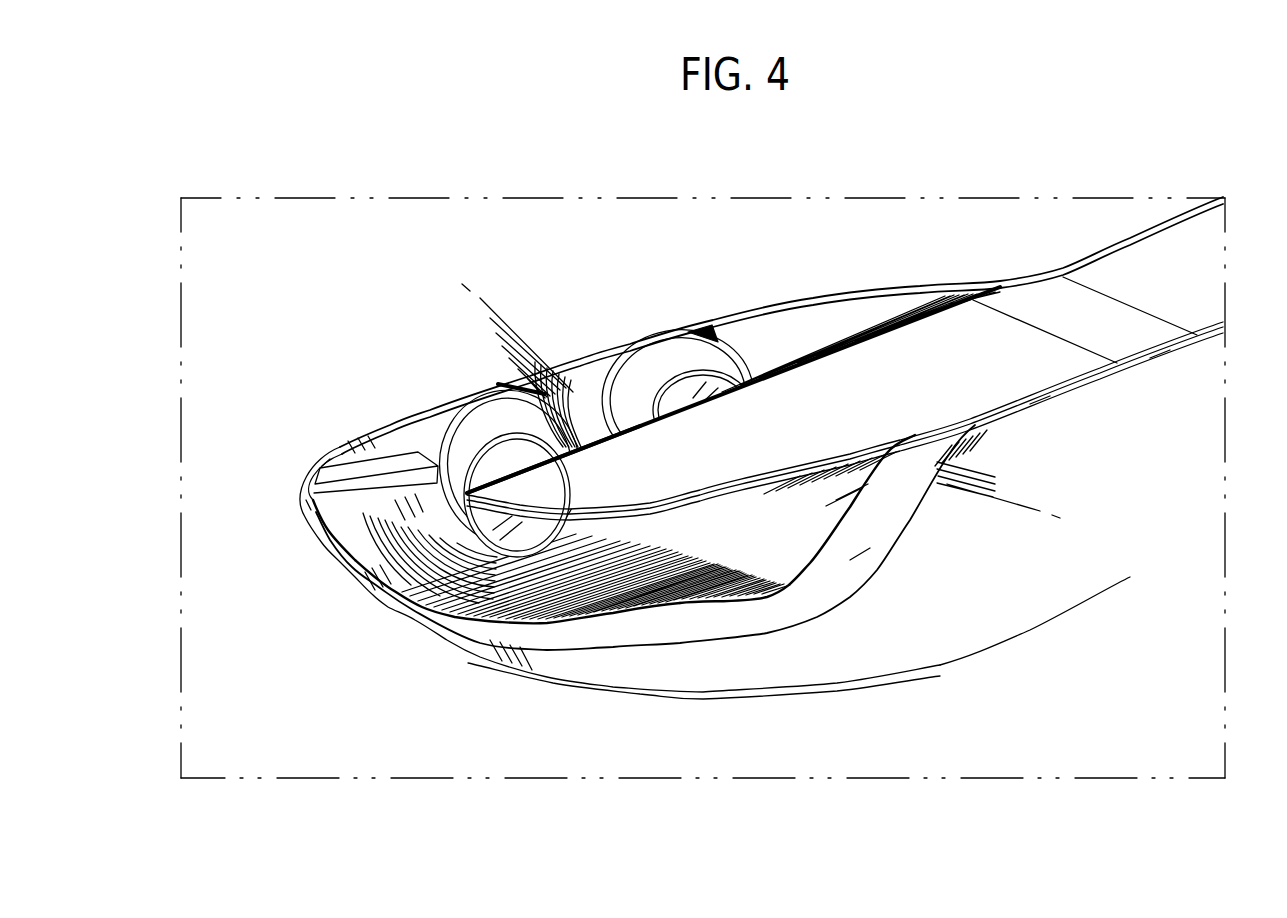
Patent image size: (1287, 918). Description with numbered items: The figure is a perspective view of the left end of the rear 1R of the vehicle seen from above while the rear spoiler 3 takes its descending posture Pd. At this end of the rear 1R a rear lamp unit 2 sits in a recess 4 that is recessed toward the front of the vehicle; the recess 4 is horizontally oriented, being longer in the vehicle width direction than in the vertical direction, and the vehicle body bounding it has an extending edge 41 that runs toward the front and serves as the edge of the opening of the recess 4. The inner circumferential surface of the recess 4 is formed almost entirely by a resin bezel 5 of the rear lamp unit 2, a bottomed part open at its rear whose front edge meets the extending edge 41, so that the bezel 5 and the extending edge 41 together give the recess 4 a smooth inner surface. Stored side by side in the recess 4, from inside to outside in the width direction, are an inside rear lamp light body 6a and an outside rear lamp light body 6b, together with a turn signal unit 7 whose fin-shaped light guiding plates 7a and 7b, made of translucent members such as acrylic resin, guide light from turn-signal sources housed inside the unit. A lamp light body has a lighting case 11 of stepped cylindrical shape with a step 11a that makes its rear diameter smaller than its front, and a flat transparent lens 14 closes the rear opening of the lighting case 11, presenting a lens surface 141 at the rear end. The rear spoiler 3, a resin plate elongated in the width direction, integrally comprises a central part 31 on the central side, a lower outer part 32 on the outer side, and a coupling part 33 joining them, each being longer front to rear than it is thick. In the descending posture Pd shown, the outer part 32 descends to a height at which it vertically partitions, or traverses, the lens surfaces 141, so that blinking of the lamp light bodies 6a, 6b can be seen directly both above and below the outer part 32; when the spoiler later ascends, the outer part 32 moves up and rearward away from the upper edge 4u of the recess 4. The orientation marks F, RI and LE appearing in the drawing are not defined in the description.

The rear of the vehicle 1R is at (1045, 686).
The rear lamp unit 2 is at (856, 549).
The rear spoiler 3 is at (1114, 386).
The central part 31 is at (1218, 297).
The outer part 32 is at (1040, 405).
The coupling part 33 is at (1160, 360).
The recess 4 is at (783, 600).
The extending edge 41 is at (737, 620).
The upper edge 4u is at (420, 412).
The bezel 5 is at (637, 613).
The inside rear lamp light body 6a is at (771, 381).
The outside rear lamp light body 6b is at (591, 437).
The turn signal unit 7 is at (343, 506).
The fin-shaped light guiding plate 7a is at (338, 463).
The fin-shaped light guiding plate 7b is at (313, 505).
The lighting case 11 is at (456, 409).
The step 11a is at (500, 405).
The lens 14 is at (519, 461).
The lens surface 141 is at (503, 462).
The descending posture Pd is at (1013, 433).
The front direction F is at (370, 340).
The right direction RI is at (375, 340).
The left direction LE is at (375, 340).